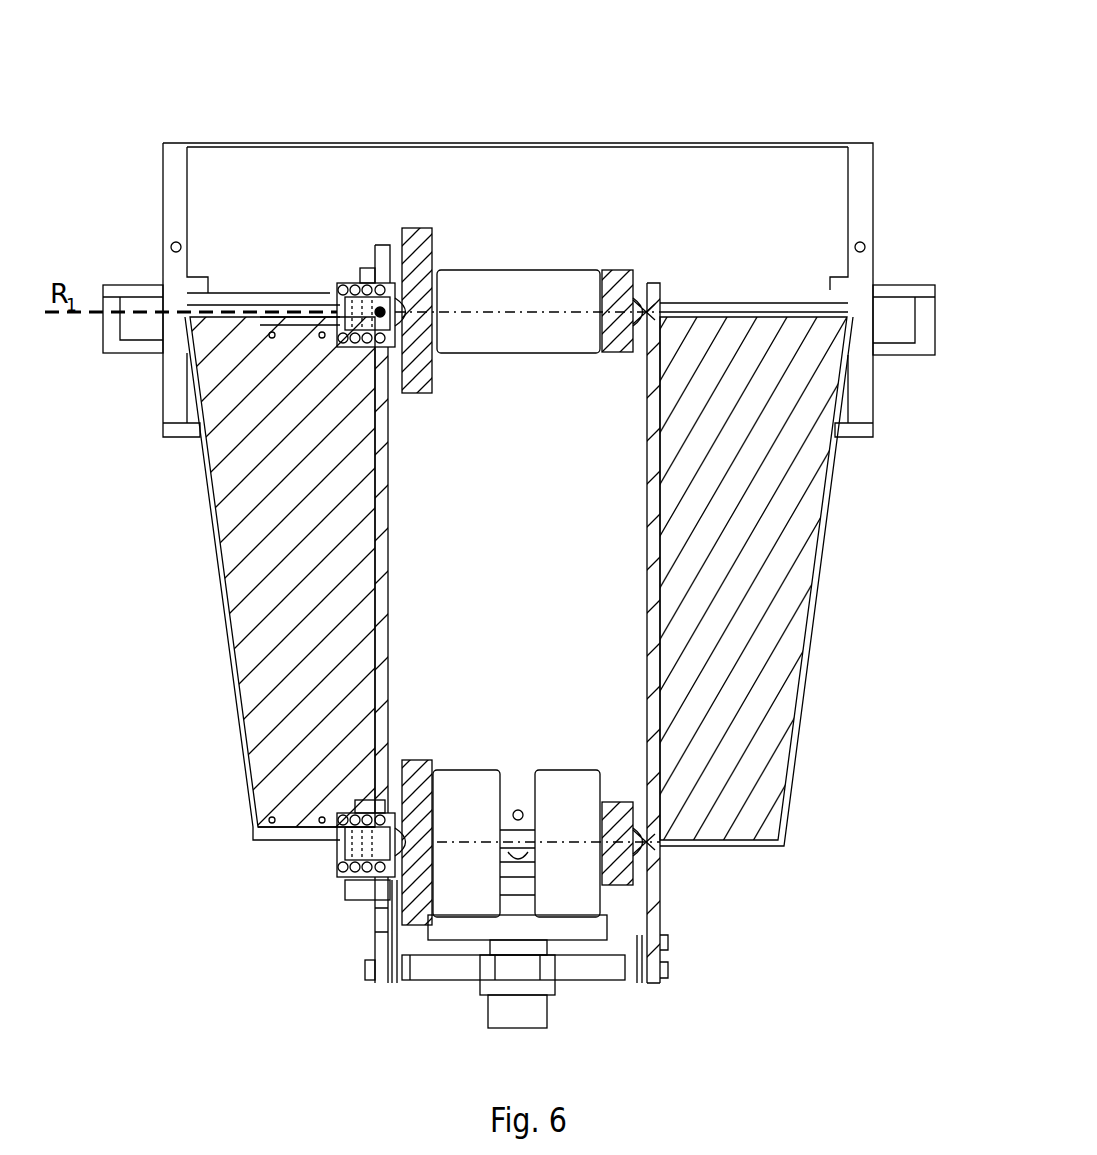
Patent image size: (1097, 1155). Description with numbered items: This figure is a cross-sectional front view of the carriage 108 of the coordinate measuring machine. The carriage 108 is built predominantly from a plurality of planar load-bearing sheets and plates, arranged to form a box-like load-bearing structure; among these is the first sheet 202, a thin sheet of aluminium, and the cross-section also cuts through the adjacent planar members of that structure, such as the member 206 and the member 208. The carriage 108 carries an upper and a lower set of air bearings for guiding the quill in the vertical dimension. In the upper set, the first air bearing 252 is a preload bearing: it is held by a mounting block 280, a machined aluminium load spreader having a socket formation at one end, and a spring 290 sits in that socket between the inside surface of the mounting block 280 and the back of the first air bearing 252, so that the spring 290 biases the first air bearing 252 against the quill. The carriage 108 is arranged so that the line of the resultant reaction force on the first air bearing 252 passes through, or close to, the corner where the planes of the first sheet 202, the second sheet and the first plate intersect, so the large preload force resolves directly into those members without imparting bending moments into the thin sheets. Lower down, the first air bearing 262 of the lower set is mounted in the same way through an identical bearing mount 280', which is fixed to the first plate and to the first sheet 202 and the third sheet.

The carriage 108 is at (880, 90).
The first sheet 202 is at (317, 549).
The second hopper section 206 is at (758, 551).
The drive cylinder 208 is at (532, 218).
The first air bearing 252 is at (422, 242).
The first air bearing of the lower set 262 is at (418, 762).
The mounting block 280 is at (269, 209).
The bearing mount 280' is at (317, 860).
The spring 290 is at (367, 285).